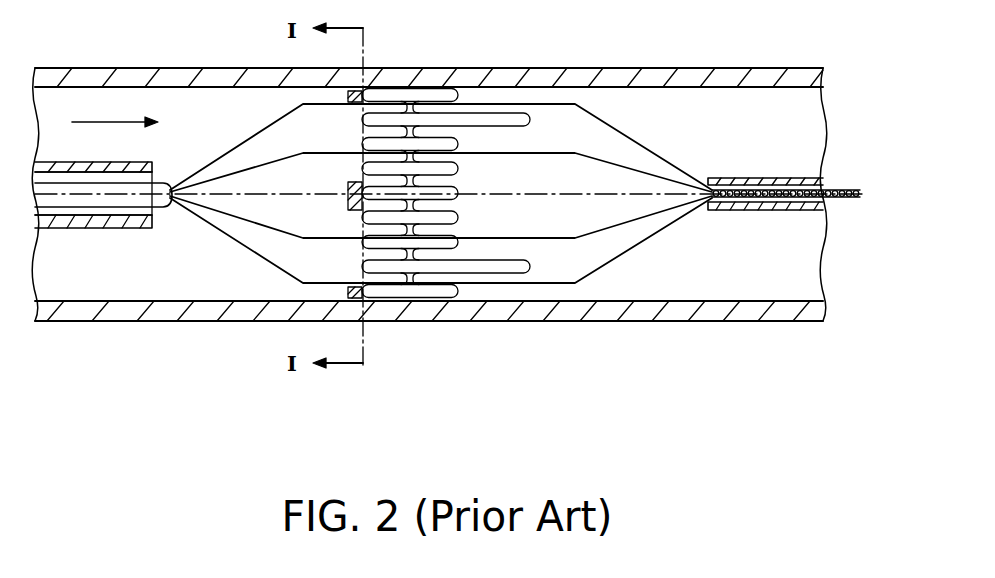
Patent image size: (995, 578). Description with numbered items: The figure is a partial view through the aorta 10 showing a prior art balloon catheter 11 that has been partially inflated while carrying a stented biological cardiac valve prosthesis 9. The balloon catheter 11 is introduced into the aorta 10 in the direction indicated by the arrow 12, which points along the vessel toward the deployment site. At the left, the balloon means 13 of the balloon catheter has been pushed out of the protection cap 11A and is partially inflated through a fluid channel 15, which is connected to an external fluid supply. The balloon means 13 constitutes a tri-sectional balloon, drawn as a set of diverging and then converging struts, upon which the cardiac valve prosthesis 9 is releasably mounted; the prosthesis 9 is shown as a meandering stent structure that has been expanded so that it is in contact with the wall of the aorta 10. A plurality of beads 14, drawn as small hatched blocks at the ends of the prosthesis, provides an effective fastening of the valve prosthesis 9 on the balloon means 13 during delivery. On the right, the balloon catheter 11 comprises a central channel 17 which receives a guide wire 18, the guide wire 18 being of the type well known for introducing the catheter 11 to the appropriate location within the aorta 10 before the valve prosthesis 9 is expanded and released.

The cardiac valve prosthesis 9 is at (436, 254).
The aorta 10 is at (197, 313).
The balloon catheter 11 is at (97, 222).
The protection cap 11A is at (77, 229).
The arrow 12 is at (96, 123).
The balloon means 13 is at (243, 250).
The beads 14 is at (348, 97).
The fluid channel 15 is at (164, 182).
The central channel 17 is at (757, 178).
The guide wire 18 is at (838, 188).